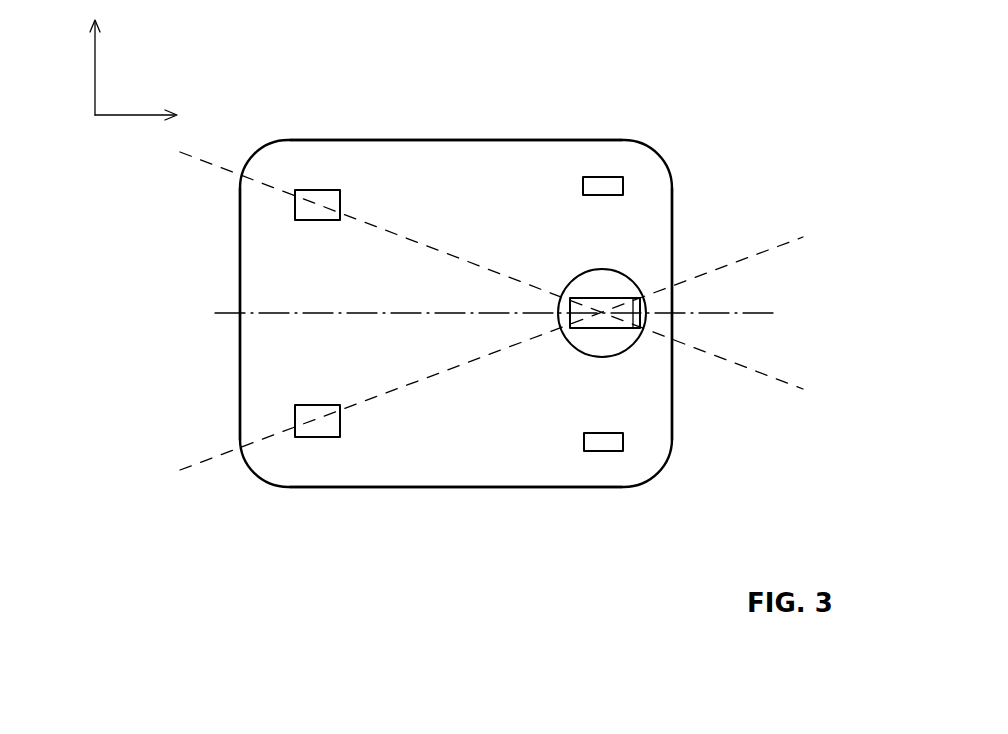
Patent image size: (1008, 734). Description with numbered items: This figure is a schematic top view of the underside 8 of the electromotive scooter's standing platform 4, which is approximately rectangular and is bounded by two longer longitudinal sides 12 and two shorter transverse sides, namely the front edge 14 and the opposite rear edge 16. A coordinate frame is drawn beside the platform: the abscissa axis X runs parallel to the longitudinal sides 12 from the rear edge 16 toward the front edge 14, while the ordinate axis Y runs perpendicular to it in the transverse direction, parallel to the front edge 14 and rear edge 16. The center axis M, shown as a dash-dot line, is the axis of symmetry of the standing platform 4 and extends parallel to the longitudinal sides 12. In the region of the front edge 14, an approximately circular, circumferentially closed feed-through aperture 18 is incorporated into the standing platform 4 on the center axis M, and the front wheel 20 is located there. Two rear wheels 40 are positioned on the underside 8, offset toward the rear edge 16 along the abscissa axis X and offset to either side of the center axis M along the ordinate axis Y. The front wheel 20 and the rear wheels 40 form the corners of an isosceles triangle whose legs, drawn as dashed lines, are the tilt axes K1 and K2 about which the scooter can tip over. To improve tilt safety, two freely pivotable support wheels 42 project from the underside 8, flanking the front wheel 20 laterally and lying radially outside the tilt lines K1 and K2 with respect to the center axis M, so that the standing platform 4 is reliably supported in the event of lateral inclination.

The standing platform 4 is at (555, 140).
The underside 8 is at (470, 180).
The longitudinal sides 12 is at (420, 140).
The front edge 14 is at (680, 388).
The rear edge 16 is at (238, 372).
The feed-through aperture 18 is at (607, 290).
The front wheel 20 is at (605, 330).
The rear wheels 40 is at (323, 200).
The support wheels 42 is at (603, 187).
The tilt axis K1 is at (772, 375).
The tilt axis K2 is at (768, 252).
The center axis M is at (740, 313).
The abscissa axis X is at (130, 115).
The ordinate axis Y is at (95, 72).